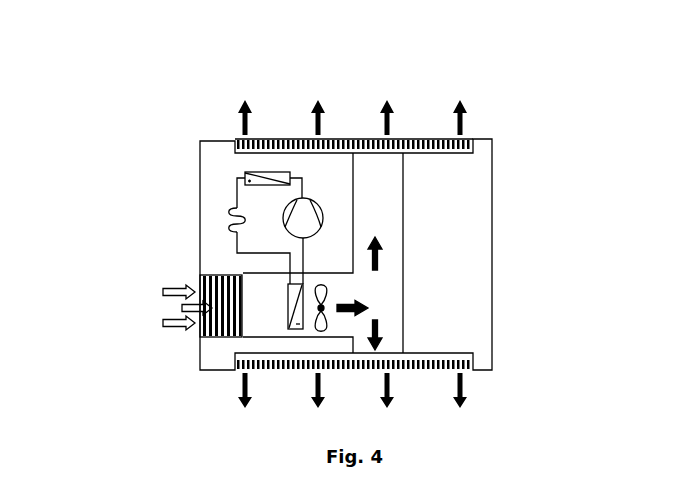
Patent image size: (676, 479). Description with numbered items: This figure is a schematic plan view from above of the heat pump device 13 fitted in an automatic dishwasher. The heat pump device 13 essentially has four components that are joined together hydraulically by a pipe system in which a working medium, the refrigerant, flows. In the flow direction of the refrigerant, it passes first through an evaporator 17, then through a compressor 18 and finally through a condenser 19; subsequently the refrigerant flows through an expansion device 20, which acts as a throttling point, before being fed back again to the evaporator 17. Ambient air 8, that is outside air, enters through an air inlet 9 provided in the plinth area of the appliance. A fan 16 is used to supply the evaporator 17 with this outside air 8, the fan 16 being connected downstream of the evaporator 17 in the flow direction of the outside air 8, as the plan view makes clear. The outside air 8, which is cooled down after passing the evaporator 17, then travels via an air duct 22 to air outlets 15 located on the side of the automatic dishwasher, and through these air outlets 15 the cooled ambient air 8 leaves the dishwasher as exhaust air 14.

The ambient air 8 is at (182, 308).
The air inlet 9 is at (200, 277).
The heat pump device 13 is at (196, 231).
The exhaust air 14 is at (390, 123).
The air outlets 15 is at (490, 141).
The fan 16 is at (330, 304).
The evaporator 17 is at (288, 288).
The compressor 18 is at (311, 202).
The condenser 19 is at (245, 173).
The expansion device 20 is at (226, 215).
The air duct 22 is at (403, 225).